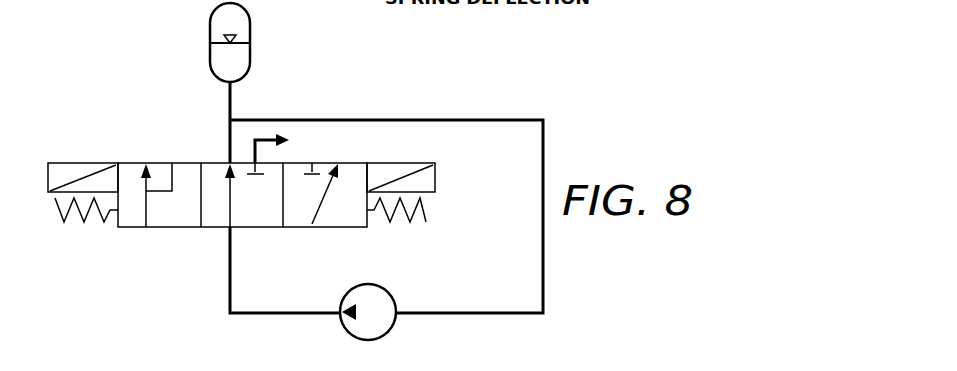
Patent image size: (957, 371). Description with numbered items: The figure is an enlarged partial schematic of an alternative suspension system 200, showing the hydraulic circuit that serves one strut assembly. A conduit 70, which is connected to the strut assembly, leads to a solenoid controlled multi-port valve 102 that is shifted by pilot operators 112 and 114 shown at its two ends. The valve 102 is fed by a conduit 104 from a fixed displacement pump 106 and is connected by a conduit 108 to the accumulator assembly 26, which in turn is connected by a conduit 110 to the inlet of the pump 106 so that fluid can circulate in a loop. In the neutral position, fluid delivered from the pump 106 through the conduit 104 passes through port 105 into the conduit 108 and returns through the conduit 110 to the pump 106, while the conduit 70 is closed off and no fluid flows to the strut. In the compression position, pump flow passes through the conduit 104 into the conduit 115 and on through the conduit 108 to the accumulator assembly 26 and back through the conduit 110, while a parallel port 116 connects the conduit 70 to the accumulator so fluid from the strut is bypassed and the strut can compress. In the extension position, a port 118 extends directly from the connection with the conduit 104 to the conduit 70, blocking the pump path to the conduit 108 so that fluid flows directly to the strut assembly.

The accumulator assembly 26 is at (195, 33).
The conduit 70 is at (258, 150).
The solenoid controlled multi-port valve 102 is at (119, 246).
The conduit 104 is at (228, 300).
The port 105 is at (228, 210).
The fixed displacement pump 106 is at (393, 298).
The conduit 108 is at (226, 106).
The conduit 110 is at (497, 118).
The pilot operator 112 is at (76, 160).
The pilot operator 114 is at (436, 178).
The conduit 115 is at (141, 168).
The parallel port 116 is at (162, 168).
The port 118 is at (322, 210).
The suspension system 200 is at (585, 279).